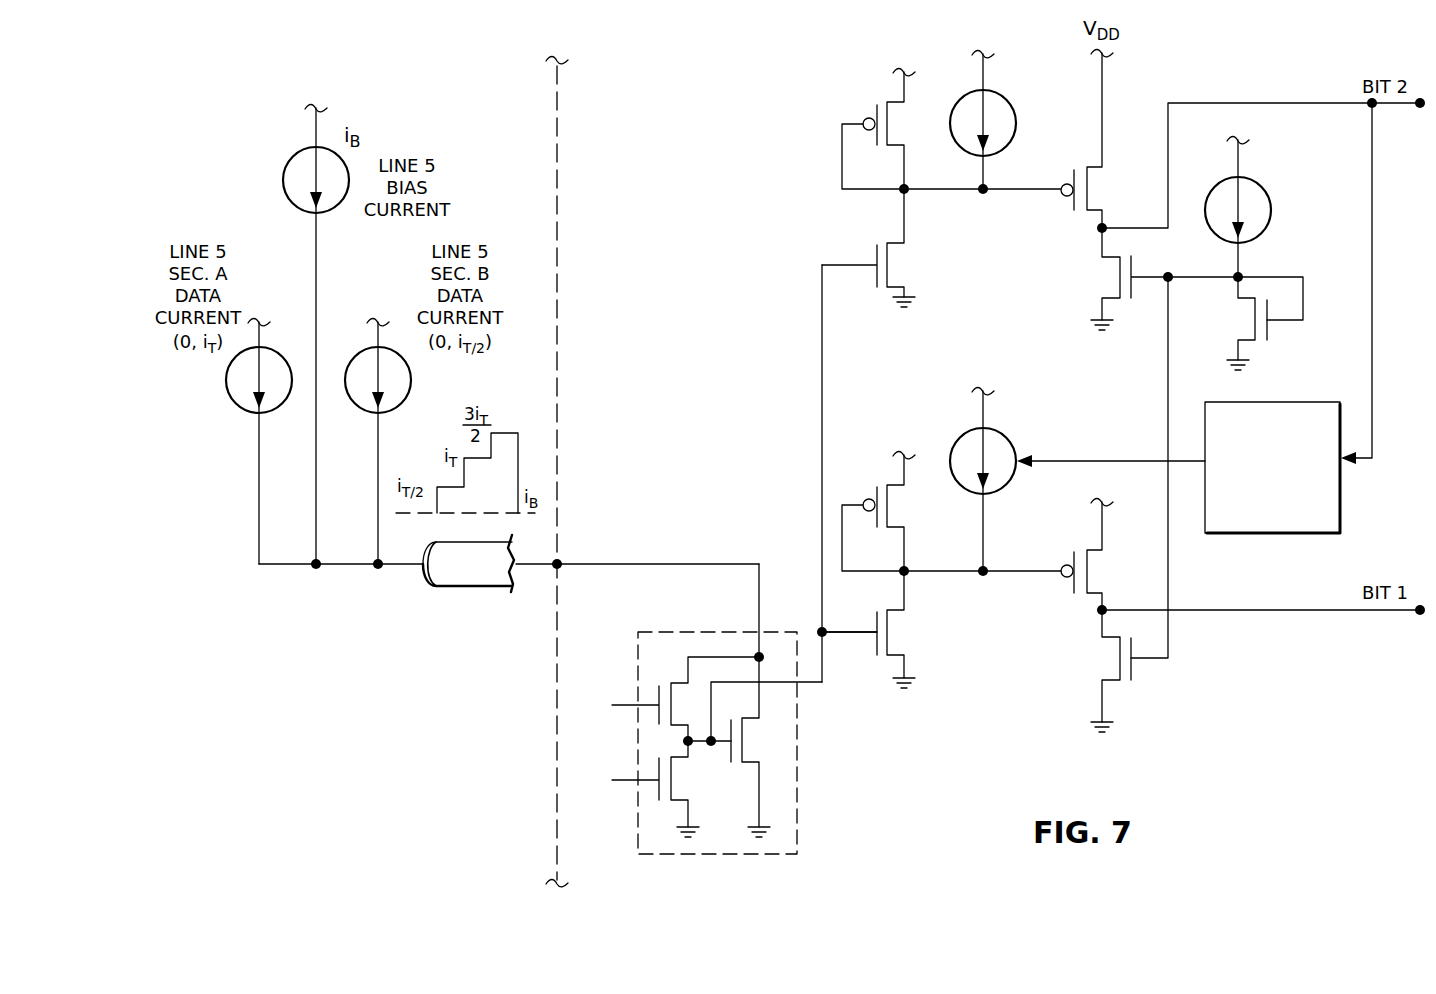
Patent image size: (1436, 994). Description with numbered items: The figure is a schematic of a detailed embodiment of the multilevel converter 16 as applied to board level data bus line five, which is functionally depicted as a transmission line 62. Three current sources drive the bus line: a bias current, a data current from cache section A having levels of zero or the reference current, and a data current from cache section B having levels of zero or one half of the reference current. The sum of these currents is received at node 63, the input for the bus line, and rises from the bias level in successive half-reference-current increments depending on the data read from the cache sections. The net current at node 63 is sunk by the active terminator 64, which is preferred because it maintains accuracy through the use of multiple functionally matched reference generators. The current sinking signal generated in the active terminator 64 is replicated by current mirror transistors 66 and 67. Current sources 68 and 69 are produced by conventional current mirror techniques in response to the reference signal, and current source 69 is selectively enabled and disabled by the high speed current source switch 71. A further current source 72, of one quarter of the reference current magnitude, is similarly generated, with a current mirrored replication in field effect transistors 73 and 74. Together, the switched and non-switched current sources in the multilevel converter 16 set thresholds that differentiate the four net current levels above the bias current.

The multilevel converter 16 is at (1180, 697).
The transmission line 62 is at (425, 585).
The node 63 is at (560, 560).
The active terminator 64 is at (797, 818).
The current mirror transistor 66 is at (905, 262).
The current mirror transistor 67 is at (905, 645).
The current source 68 is at (962, 102).
The current source 69 is at (962, 440).
The high speed current source switch 71 is at (1302, 517).
The current source 72 is at (1218, 189).
The field effect transistor 73 is at (1103, 282).
The field effect transistor 74 is at (1103, 665).